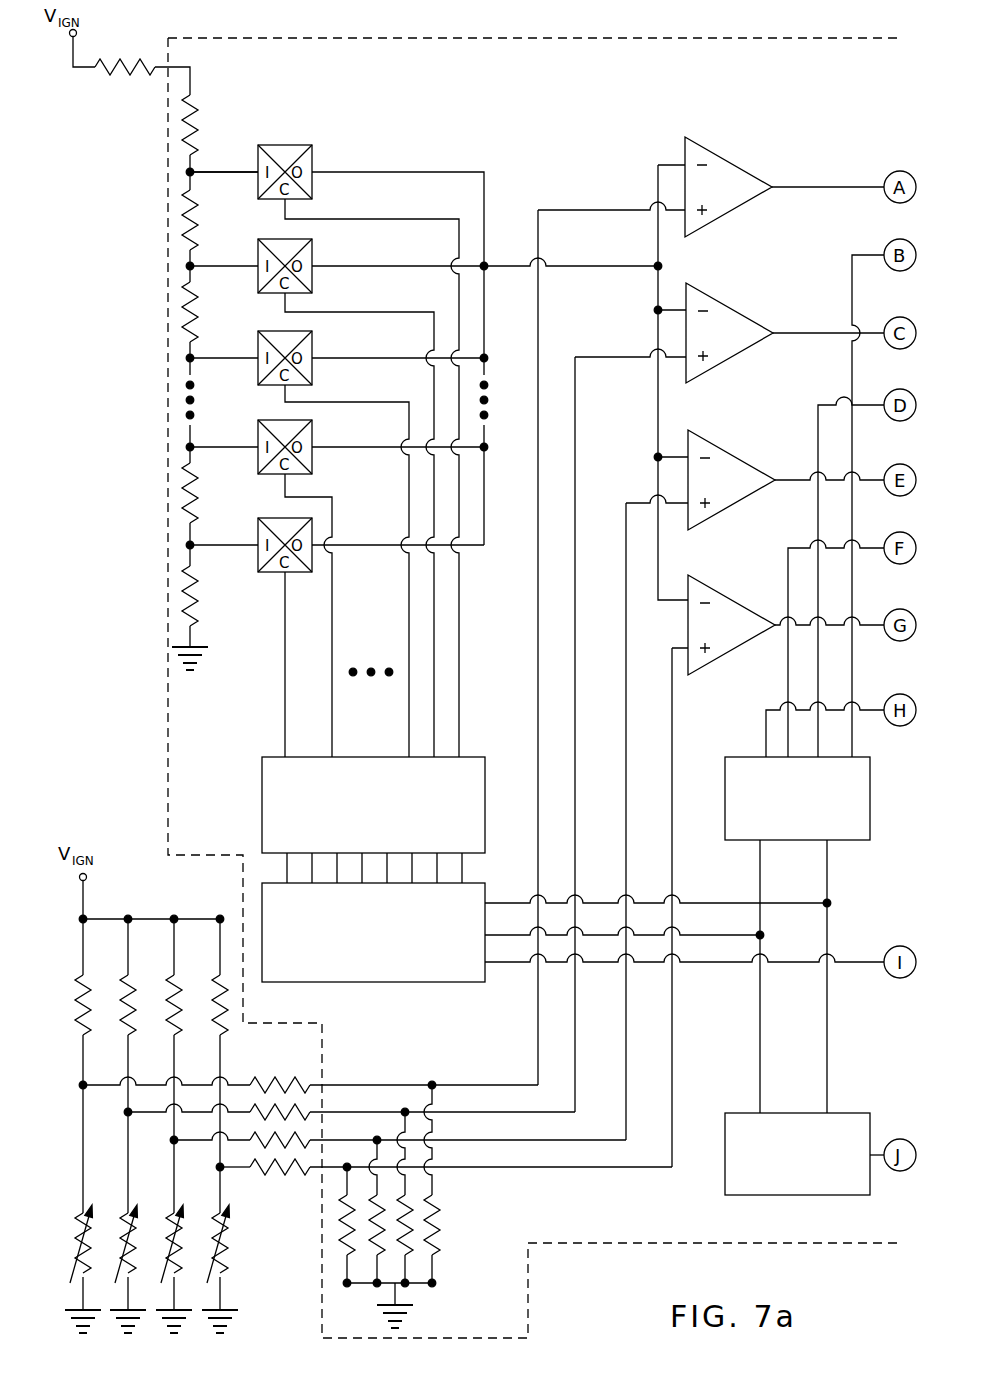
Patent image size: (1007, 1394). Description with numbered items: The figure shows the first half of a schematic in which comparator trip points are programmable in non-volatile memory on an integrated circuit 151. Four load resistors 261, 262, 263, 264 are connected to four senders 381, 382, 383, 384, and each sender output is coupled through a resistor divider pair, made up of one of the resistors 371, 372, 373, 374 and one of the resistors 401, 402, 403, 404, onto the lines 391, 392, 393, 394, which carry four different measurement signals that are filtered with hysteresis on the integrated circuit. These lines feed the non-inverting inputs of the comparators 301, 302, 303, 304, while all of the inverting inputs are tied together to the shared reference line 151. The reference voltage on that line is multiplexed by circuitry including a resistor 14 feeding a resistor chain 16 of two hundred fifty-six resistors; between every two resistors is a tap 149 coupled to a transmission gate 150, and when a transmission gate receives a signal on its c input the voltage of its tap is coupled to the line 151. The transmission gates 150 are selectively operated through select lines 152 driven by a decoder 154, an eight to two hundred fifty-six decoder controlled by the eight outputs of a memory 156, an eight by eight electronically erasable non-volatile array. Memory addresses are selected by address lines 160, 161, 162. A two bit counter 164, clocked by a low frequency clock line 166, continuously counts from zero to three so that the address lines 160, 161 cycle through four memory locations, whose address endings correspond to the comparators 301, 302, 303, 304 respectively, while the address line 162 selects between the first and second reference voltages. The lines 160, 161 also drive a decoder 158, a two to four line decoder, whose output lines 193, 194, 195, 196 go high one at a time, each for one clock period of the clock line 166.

The resistor 14 is at (122, 60).
The resistor chain 16 is at (183, 263).
The tap 149 is at (222, 160).
The transmission gate 150 is at (288, 115).
The line 151 is at (502, 265).
The select lines 152 is at (274, 706).
The decoder 154 is at (487, 775).
The memory 156 is at (487, 893).
The decoder 158 is at (872, 822).
The address line 160 is at (696, 900).
The address line 161 is at (735, 925).
The address line 162 is at (727, 966).
The counter 164 is at (817, 1197).
The clock line 166 is at (888, 1167).
The decoder output line 193 is at (857, 728).
The decoder output line 194 is at (835, 672).
The decoder output line 195 is at (786, 663).
The decoder output line 196 is at (766, 722).
The load resistor 261 is at (88, 997).
The load resistor 262 is at (137, 1000).
The load resistor 263 is at (180, 987).
The load resistor 264 is at (225, 1012).
The comparator 301 is at (737, 165).
The comparator 302 is at (730, 302).
The comparator 303 is at (742, 458).
The comparator 304 is at (735, 598).
The resistor 371 is at (273, 1082).
The resistor 372 is at (300, 1112).
The resistor 373 is at (282, 1170).
The resistor 374 is at (297, 1180).
The sender 381 is at (88, 1240).
The sender 382 is at (137, 1240).
The sender 383 is at (187, 1263).
The sender 384 is at (227, 1233).
The line 391 is at (578, 208).
The line 392 is at (622, 355).
The line 393 is at (643, 498).
The line 394 is at (683, 646).
The resistor 401 is at (338, 1240).
The resistor 402 is at (385, 1250).
The resistor 403 is at (410, 1205).
The resistor 404 is at (437, 1205).